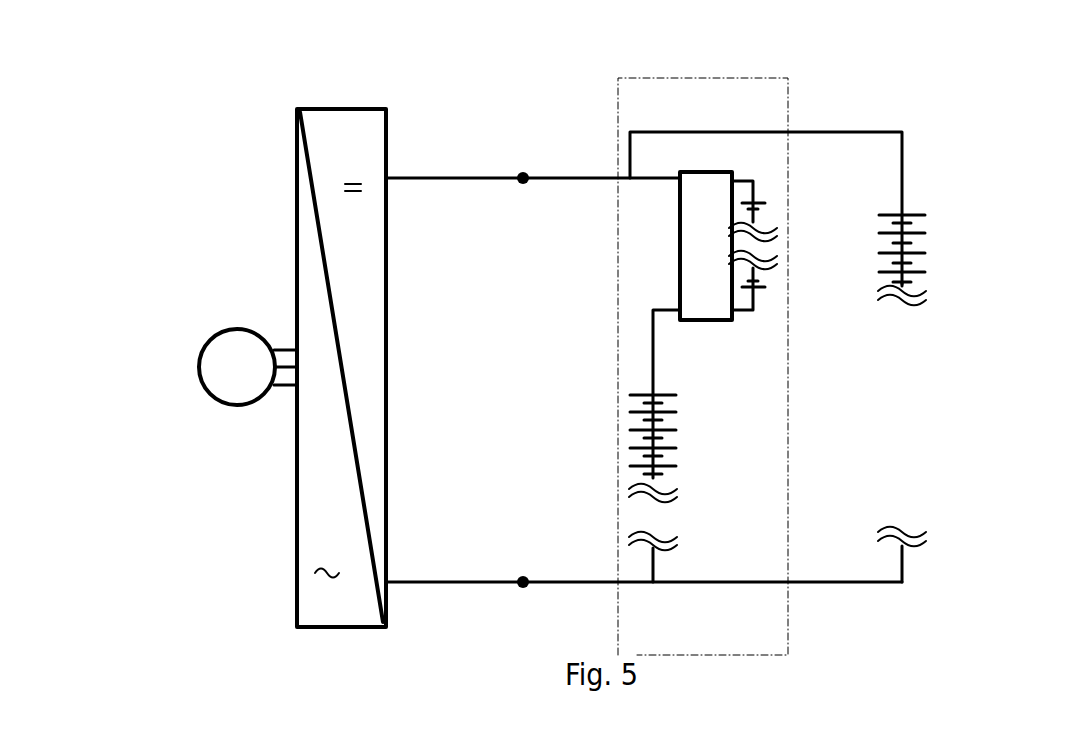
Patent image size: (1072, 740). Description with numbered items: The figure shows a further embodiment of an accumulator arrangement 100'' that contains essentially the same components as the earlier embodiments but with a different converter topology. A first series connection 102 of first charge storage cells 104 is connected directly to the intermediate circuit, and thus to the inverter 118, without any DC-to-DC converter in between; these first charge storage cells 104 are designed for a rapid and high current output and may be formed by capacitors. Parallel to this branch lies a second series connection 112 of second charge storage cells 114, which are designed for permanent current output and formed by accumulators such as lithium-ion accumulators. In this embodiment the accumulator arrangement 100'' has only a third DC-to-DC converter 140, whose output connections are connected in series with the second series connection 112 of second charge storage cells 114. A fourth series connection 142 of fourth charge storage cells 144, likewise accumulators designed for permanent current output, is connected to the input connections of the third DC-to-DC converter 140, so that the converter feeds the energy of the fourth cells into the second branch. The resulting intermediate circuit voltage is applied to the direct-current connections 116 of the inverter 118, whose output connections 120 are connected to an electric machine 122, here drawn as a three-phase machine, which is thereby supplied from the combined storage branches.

The accumulator arrangement 100'' is at (740, 340).
The first series connection 102 is at (842, 349).
The first charge storage cells 104 is at (932, 215).
The second series connection 112 is at (722, 446).
The second charge storage cells 114 is at (678, 395).
The direct-current connections 116 is at (402, 262).
The inverter 118 is at (333, 122).
The output connections 120 is at (270, 302).
The electric machine 122 is at (215, 373).
The third DC-to-DC converter 140 is at (697, 203).
The fourth series connection 142 is at (828, 248).
The fourth charge storage cells 144 is at (768, 203).